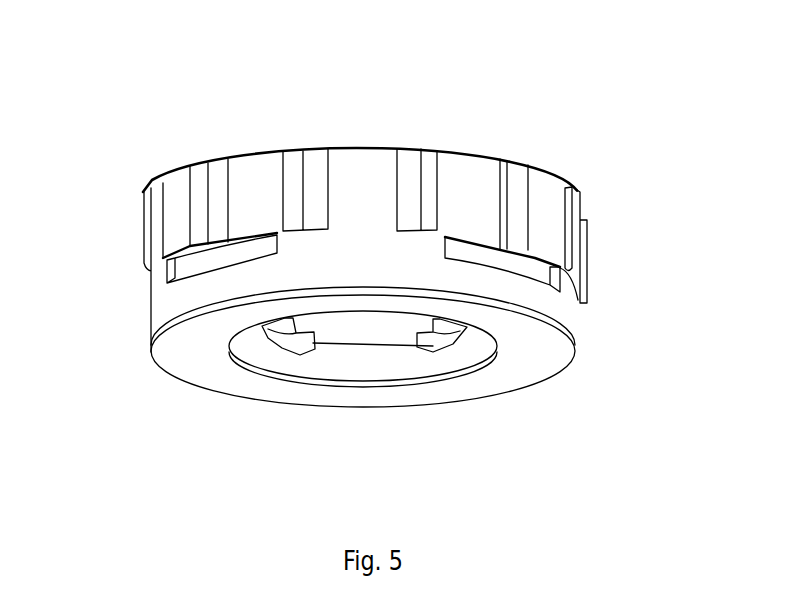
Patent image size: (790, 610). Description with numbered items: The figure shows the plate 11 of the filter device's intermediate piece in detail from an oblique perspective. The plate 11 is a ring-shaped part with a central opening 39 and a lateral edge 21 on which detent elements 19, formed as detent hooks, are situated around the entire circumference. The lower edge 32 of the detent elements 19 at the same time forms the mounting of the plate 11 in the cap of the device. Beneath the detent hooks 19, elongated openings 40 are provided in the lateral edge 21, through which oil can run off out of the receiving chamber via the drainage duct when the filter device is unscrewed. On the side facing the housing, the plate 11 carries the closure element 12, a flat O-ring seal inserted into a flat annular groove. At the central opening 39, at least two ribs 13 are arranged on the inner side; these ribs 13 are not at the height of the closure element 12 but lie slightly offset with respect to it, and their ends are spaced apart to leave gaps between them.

The plate 11 is at (477, 158).
The closure element 12 is at (550, 358).
The ribs 13 is at (279, 346).
The detent elements 19 is at (202, 178).
The lateral edge 21 is at (260, 175).
The lower edge 32 is at (149, 271).
The central opening 39 is at (362, 330).
The elongated openings 40 is at (197, 262).